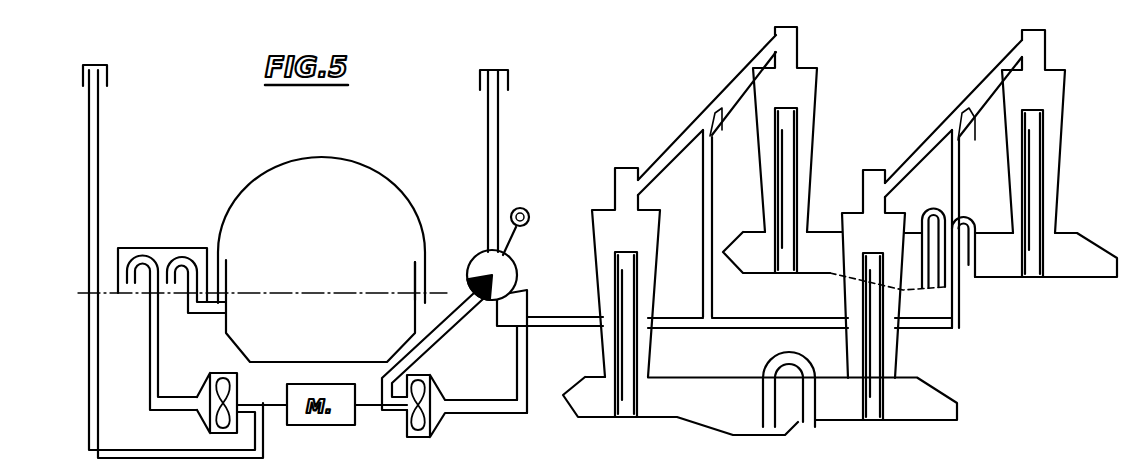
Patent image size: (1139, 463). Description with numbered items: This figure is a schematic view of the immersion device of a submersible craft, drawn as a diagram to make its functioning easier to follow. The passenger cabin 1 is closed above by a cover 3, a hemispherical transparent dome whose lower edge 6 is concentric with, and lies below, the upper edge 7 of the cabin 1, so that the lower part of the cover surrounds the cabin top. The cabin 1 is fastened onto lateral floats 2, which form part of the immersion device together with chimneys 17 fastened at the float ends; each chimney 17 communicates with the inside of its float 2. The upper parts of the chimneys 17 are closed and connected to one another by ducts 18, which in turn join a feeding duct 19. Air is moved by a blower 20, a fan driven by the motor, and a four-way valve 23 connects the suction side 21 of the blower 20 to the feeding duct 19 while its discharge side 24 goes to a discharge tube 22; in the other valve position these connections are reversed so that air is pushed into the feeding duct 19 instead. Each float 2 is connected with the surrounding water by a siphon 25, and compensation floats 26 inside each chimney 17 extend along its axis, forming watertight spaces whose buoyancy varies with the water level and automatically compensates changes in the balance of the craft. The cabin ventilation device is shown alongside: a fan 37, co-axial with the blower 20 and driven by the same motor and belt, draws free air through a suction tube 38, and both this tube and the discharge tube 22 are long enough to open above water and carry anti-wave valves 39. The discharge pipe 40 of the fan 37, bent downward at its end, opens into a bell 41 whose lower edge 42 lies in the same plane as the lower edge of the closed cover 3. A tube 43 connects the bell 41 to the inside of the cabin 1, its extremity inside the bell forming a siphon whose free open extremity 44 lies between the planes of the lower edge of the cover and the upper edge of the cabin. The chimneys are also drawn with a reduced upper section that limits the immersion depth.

The cabin 1 is at (241, 359).
The lateral floats 2 is at (840, 333).
The cover 3 is at (312, 157).
The lower edge of the cover 6 is at (431, 292).
The edge of the upper part of the cabin 7 is at (415, 272).
The chimneys 17 is at (650, 236).
The ducts 18 is at (830, 116).
The feeding duct 19 is at (557, 323).
The blower 20 is at (418, 437).
The suction side of the blower 21 is at (429, 336).
The discharge tube 22 is at (495, 150).
The four-way valve 23 is at (511, 275).
The discharge side of the blower 24 is at (473, 407).
The siphon 25 is at (812, 410).
The compensation floats 26 is at (632, 300).
The fan 37 is at (206, 416).
The suction tube 38 is at (98, 142).
The anti-wave valves 39 is at (108, 76).
The discharge pipe 40 is at (158, 358).
The bell 41 is at (135, 248).
The lower edge of the bell 42 is at (119, 300).
The tube 43 is at (226, 310).
The free open extremity of the siphon 44 is at (170, 297).